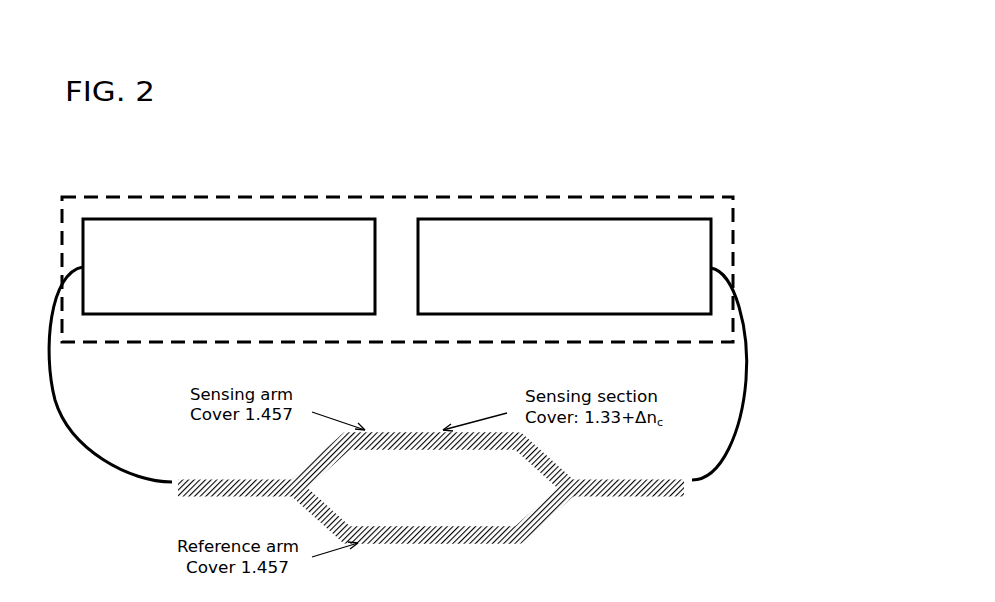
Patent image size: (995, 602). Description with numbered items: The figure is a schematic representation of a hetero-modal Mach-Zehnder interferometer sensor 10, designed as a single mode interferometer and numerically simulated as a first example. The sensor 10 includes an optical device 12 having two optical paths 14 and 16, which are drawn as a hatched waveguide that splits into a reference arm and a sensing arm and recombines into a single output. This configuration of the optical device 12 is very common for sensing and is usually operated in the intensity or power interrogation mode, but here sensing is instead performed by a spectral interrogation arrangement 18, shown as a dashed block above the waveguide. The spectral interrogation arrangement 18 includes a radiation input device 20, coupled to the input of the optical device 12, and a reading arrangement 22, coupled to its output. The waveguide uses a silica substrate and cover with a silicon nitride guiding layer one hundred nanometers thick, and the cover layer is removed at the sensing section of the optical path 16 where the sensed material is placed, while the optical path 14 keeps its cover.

The sensor 10 is at (666, 121).
The optical device 12 is at (198, 490).
The optical path 14 is at (430, 533).
The optical path 16 is at (473, 443).
The spectral interrogation arrangement 18 is at (397, 197).
The radiation input device 20 is at (229, 219).
The reading arrangement 22 is at (566, 219).